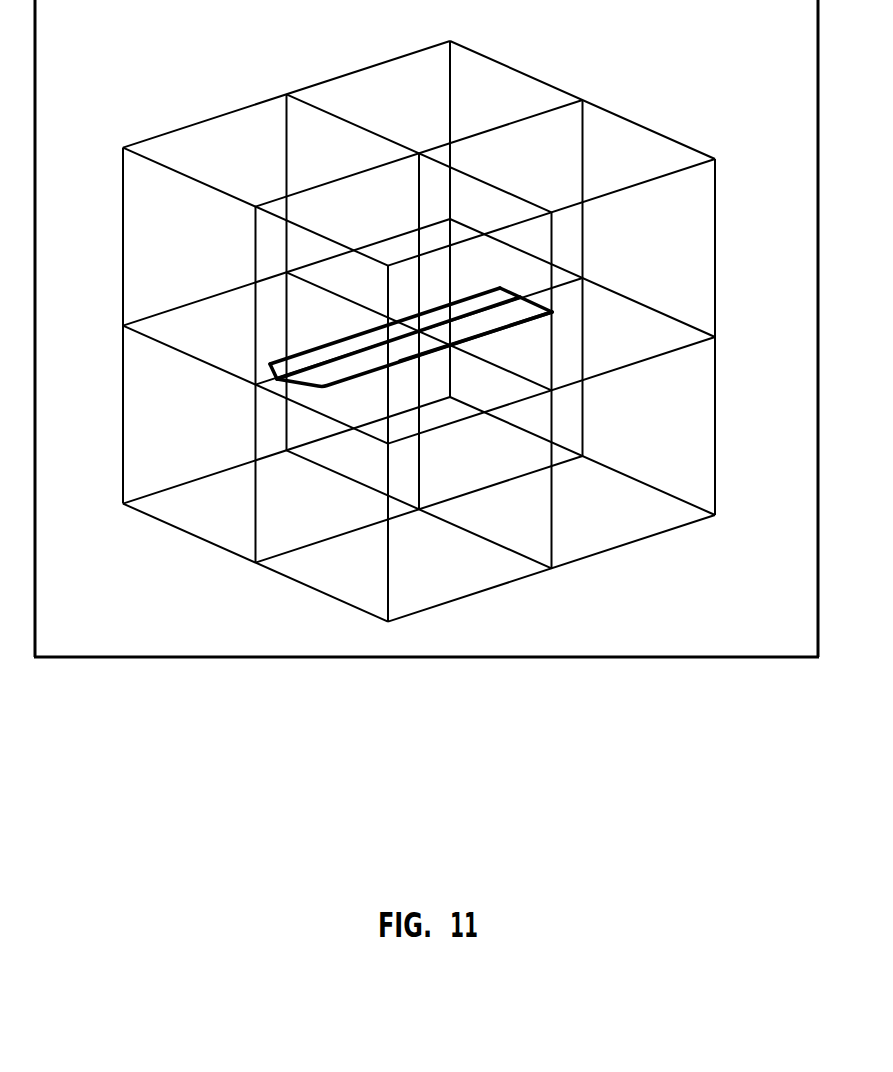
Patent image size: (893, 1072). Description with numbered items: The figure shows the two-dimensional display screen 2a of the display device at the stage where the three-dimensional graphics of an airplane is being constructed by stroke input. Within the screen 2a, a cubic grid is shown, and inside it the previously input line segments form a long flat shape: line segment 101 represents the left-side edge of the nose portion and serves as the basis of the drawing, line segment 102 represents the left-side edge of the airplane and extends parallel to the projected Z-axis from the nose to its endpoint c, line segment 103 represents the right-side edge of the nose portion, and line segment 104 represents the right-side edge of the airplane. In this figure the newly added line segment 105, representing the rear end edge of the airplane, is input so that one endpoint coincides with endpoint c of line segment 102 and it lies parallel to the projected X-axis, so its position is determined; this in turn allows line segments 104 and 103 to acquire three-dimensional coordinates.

The 2D display screen 2a is at (648, 657).
The line segment 101 is at (303, 389).
The line segment 102 is at (480, 338).
The line segment 103 is at (271, 373).
The line segment 104 is at (322, 346).
The line segment 105 is at (522, 296).
The endpoint C is at (556, 316).